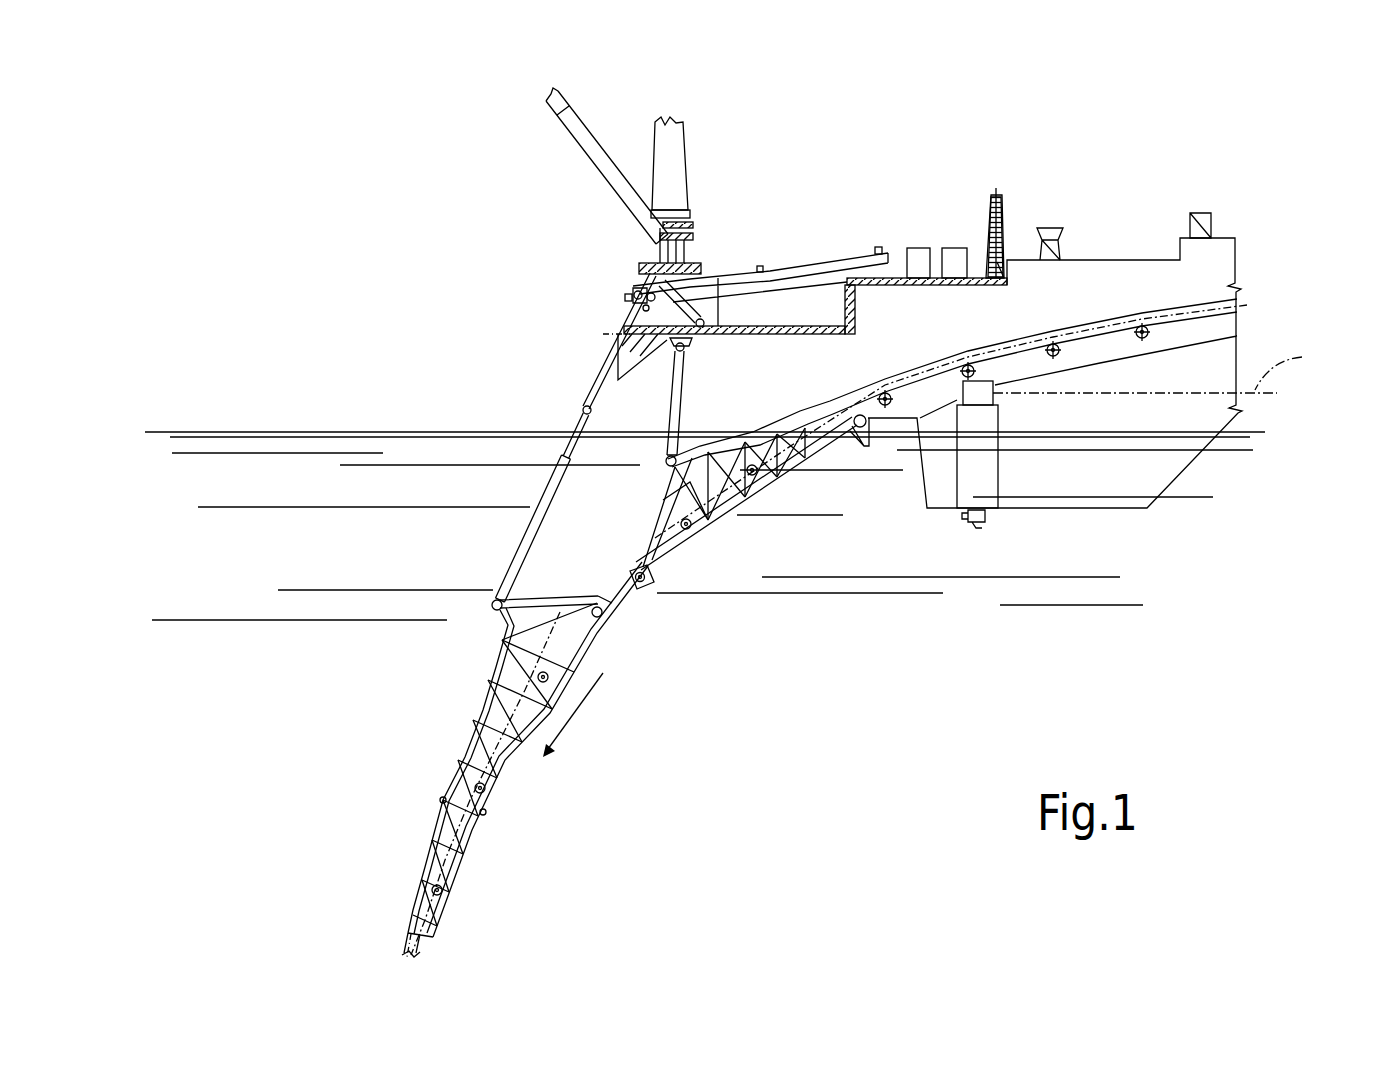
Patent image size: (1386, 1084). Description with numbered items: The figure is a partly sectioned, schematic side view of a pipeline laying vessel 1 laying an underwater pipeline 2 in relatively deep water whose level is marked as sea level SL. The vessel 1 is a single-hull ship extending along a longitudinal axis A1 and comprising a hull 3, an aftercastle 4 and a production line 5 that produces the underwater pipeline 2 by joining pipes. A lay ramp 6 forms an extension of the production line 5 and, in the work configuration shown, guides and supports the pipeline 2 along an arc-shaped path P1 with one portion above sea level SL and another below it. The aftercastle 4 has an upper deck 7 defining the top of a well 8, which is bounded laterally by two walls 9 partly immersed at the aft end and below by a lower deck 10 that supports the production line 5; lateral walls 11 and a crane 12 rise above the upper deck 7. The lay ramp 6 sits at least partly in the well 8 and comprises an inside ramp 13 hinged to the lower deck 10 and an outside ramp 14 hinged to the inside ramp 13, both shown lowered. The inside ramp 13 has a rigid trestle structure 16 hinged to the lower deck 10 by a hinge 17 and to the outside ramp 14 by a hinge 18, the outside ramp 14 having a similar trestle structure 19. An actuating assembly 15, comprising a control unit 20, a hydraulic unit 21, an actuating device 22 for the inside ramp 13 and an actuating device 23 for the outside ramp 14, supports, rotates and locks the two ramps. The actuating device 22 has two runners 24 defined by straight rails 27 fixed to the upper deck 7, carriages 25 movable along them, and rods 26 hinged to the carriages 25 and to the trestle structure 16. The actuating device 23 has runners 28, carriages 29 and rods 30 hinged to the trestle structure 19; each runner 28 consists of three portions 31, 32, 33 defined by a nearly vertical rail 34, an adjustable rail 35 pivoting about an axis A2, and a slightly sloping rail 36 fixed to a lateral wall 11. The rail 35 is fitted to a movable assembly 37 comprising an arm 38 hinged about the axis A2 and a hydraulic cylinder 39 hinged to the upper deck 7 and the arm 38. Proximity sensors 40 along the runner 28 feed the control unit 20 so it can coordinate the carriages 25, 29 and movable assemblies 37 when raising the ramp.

The pipeline laying vessel 1 is at (1044, 104).
The underwater pipeline 2 is at (497, 727).
The hull 3 is at (1143, 483).
The aftercastle 4 is at (773, 170).
The production line 5 is at (1185, 269).
The lay ramp 6 is at (806, 690).
The upper deck 7 is at (856, 310).
The well 8 is at (880, 345).
The walls 9 is at (835, 357).
The lower deck 10 is at (883, 427).
The lateral walls 11 is at (810, 283).
The crane 12 is at (708, 115).
The inside ramp 13 is at (803, 557).
The outside ramp 14 is at (536, 908).
The actuating assembly 15 is at (517, 199).
The trestle structure 16 is at (741, 503).
The hinge 17 is at (852, 428).
The hinge 18 is at (643, 580).
The trestle structure 19 is at (483, 800).
The control unit 20 is at (951, 247).
The hydraulic unit 21 is at (918, 247).
The actuating device 22 is at (745, 378).
The actuating device 23 is at (482, 350).
The runners 24 is at (715, 338).
The carriages 25 is at (688, 348).
The rods 26 is at (680, 416).
The rails 27 is at (828, 345).
The runners 28 is at (530, 245).
The carriages 29 is at (583, 405).
The rods 30 is at (546, 492).
The portion 31 is at (594, 357).
The portion 32 is at (630, 259).
The portion 33 is at (808, 240).
The rail 34 is at (638, 312).
The rail 35 is at (639, 281).
The rail 36 is at (782, 275).
The movable assembly 37 is at (745, 284).
The arm 38 is at (680, 267).
The hydraulic cylinder 39 is at (716, 302).
The proximity sensors 40 is at (879, 247).
The sea level SL is at (257, 426).
The longitudinal axis A1 is at (1162, 369).
The axis A2 is at (599, 335).
The arc-shaped path P1 is at (570, 727).